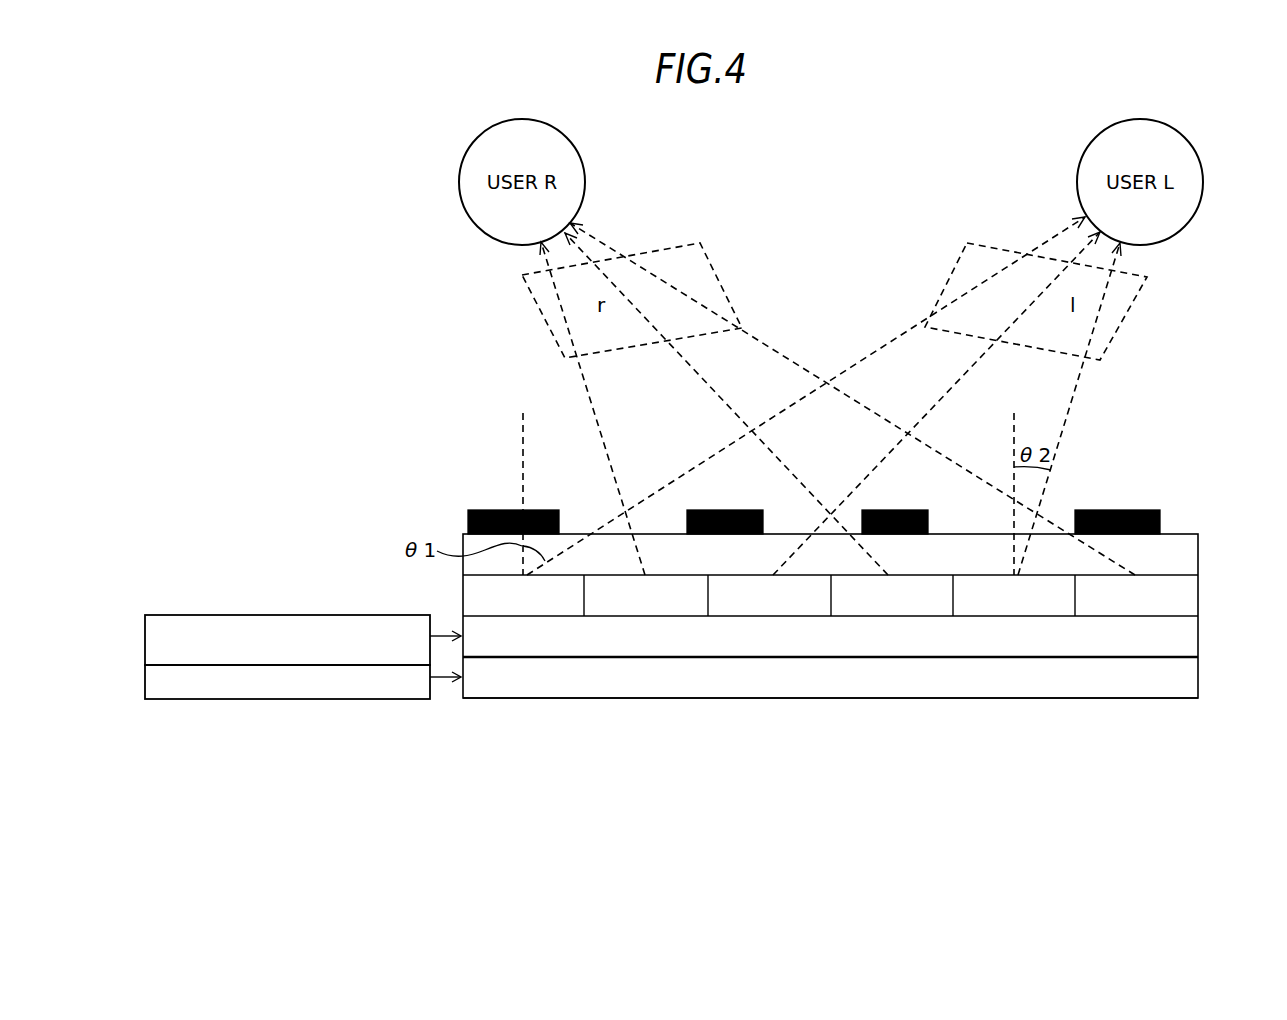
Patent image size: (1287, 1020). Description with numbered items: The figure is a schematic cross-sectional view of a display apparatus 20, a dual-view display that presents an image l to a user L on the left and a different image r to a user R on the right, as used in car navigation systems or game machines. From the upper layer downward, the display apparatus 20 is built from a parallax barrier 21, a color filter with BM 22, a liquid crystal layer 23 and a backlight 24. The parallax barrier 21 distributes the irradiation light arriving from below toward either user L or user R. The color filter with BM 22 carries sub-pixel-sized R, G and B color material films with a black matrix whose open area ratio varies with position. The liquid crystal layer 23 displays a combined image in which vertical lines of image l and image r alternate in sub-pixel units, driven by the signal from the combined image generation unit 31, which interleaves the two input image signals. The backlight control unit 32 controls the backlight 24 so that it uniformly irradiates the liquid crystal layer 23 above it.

The display apparatus 20 is at (821, 757).
The parallax barrier 21 is at (1182, 523).
The color filter with BM 22 is at (1200, 599).
The liquid crystal layer 23 is at (1182, 640).
The backlight 24 is at (1182, 680).
The combined image generation unit 31 is at (287, 612).
The backlight control unit 32 is at (287, 702).